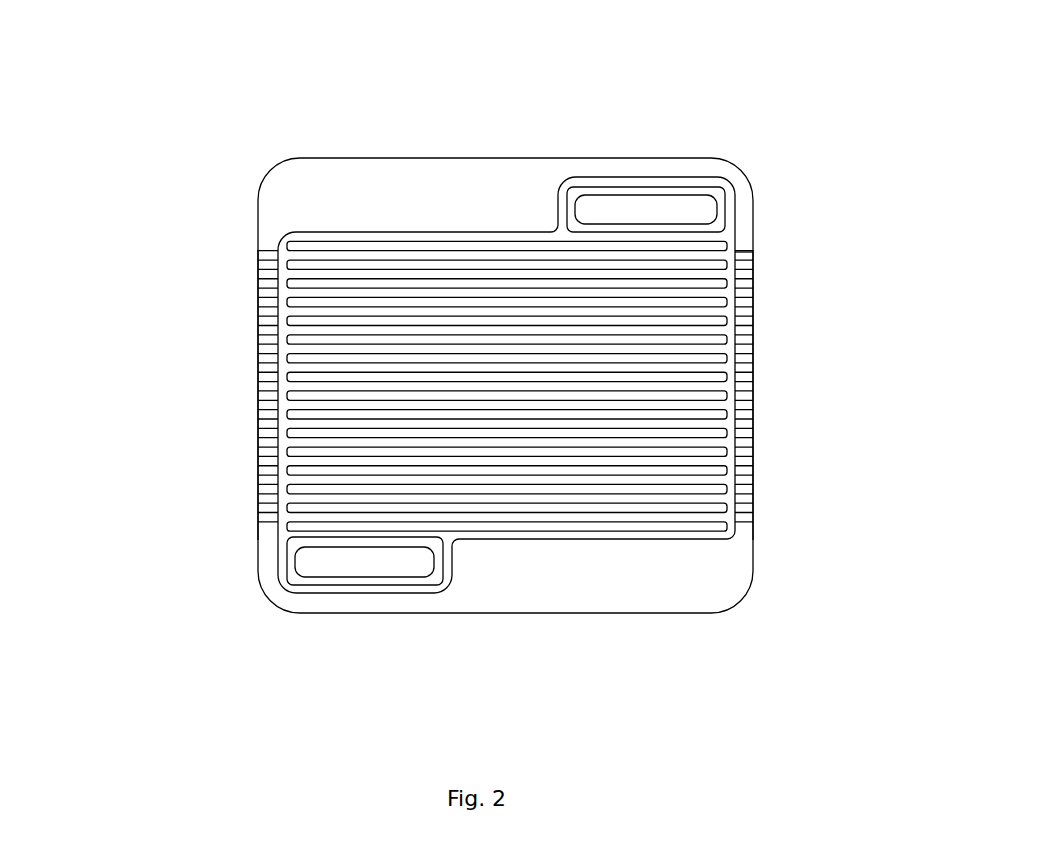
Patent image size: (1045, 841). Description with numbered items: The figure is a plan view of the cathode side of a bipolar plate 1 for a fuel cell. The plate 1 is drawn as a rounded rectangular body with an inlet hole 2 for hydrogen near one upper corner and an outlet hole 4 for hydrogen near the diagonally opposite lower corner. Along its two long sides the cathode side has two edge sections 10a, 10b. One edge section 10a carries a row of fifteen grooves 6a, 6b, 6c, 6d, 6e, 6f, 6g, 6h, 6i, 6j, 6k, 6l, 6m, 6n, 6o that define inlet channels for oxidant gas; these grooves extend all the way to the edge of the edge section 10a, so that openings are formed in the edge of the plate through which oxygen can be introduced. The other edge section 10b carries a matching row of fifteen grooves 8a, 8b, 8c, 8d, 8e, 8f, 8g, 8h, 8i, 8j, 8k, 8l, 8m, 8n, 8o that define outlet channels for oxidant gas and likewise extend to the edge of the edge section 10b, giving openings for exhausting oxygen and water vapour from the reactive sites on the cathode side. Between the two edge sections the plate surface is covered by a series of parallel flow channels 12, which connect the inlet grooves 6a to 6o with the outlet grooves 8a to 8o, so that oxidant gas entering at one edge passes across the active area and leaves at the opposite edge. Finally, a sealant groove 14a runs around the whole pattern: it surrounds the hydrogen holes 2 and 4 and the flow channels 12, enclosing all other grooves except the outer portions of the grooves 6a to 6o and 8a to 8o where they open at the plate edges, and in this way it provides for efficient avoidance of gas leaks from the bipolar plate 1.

The bipolar plate 1 is at (500, 127).
The inlet hole 2 is at (650, 207).
The outlet hole 4 is at (372, 565).
The groove 6a is at (270, 255).
The groove 6b is at (270, 274).
The groove 6c is at (270, 293).
The groove 6d is at (270, 312).
The groove 6e is at (270, 330).
The groove 6f is at (270, 349).
The groove 6g is at (270, 368).
The groove 6h is at (270, 386).
The groove 6i is at (270, 405).
The groove 6j is at (270, 424).
The groove 6k is at (270, 442).
The groove 6l is at (270, 461).
The groove 6m is at (270, 480).
The groove 6n is at (270, 498).
The groove 6o is at (270, 517).
The groove 8a is at (745, 255).
The groove 8b is at (745, 274).
The groove 8c is at (745, 293).
The groove 8d is at (745, 312).
The groove 8e is at (745, 330).
The groove 8f is at (745, 349).
The groove 8g is at (745, 368).
The groove 8h is at (745, 386).
The groove 8i is at (745, 405).
The groove 8j is at (745, 424).
The groove 8k is at (745, 442).
The groove 8l is at (745, 461).
The groove 8m is at (745, 480).
The groove 8n is at (745, 498).
The groove 8o is at (745, 517).
The edge section 10a is at (244, 239).
The edge section 10b is at (770, 215).
The flow channels 12 is at (480, 458).
The sealant groove 14a is at (337, 238).